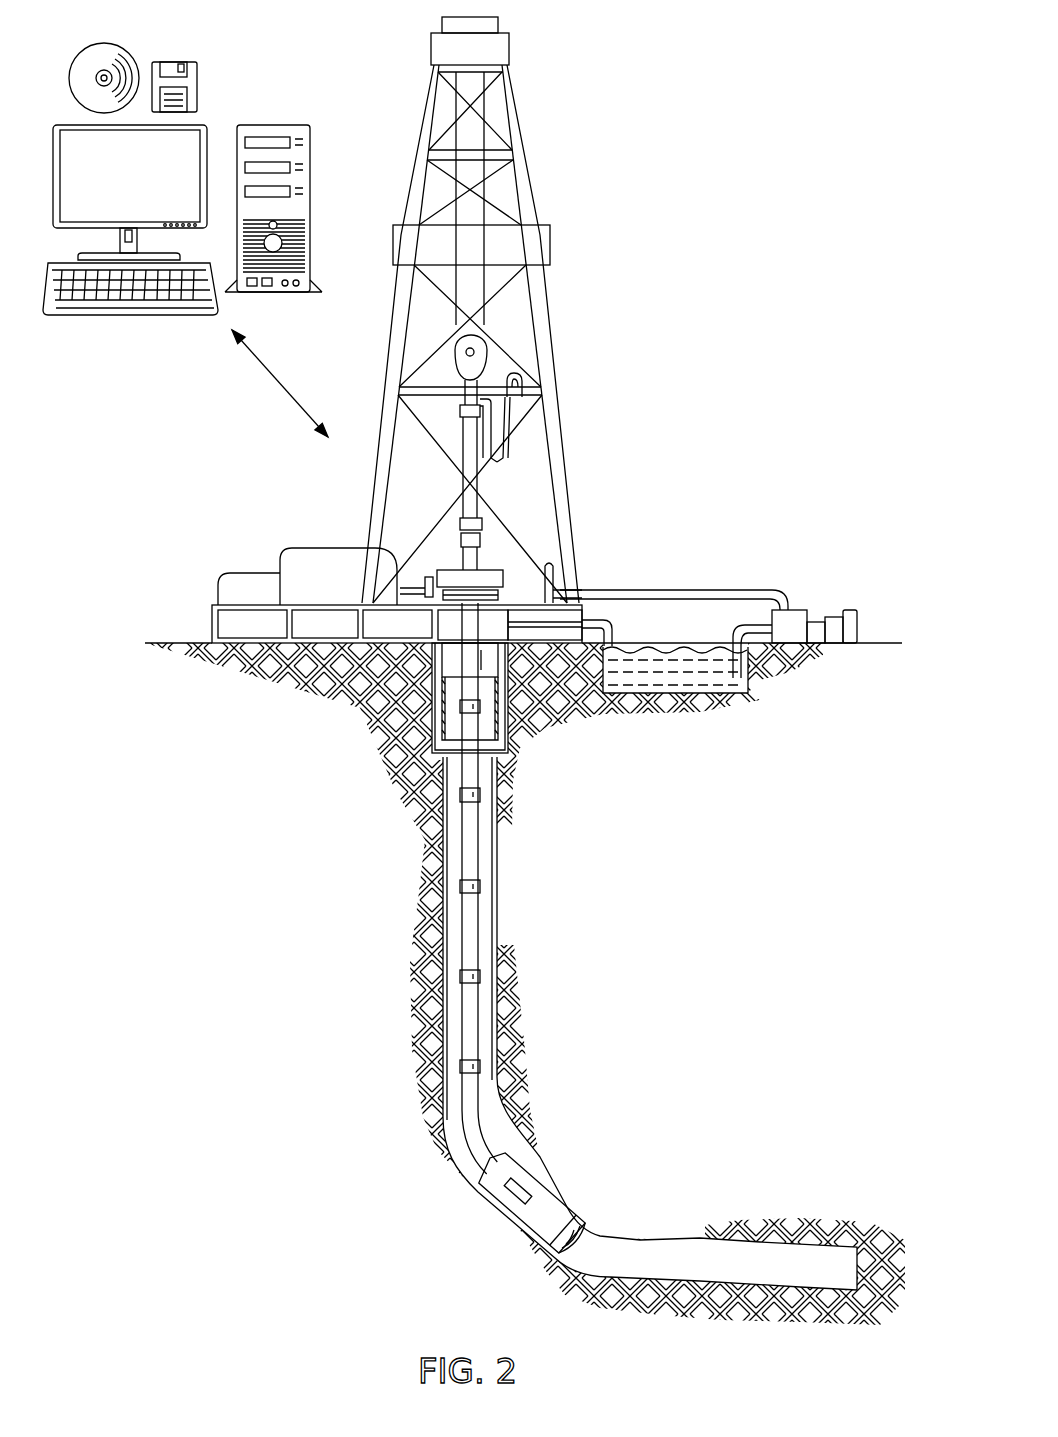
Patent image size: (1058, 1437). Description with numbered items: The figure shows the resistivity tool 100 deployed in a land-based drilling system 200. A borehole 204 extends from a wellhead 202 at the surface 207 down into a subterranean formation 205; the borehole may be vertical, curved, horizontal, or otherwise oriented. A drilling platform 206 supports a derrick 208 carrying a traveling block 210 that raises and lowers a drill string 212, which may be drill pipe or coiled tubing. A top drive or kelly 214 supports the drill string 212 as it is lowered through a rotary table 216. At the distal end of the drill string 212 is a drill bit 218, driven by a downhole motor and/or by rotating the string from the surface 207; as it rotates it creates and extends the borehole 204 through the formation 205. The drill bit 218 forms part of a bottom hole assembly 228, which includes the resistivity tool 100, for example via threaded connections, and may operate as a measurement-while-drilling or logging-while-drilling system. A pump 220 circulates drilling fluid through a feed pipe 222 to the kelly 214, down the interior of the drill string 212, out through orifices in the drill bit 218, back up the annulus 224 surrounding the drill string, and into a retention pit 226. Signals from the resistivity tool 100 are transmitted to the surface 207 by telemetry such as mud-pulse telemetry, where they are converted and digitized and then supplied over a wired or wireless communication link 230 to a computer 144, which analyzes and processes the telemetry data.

The resistivity tool 100 is at (527, 1183).
The computer 144 is at (248, 86).
The drilling system 200 is at (753, 58).
The wellhead 202 is at (518, 585).
The borehole 204 is at (488, 910).
The subterranean formation 205 is at (745, 991).
The drilling platform 206 is at (212, 626).
The surface 207 is at (877, 643).
The derrick 208 is at (527, 190).
The traveling block 210 is at (452, 372).
The drill string 212 is at (480, 848).
The kelly 214 is at (458, 435).
The rotary table 216 is at (452, 570).
The drill bit 218 is at (585, 1250).
The pump 220 is at (797, 610).
The feed pipe 222 is at (683, 590).
The annulus 224 is at (442, 888).
The retention pit 226 is at (678, 690).
The bottom hole assembly 228 is at (473, 1195).
The communication link 230 is at (268, 383).